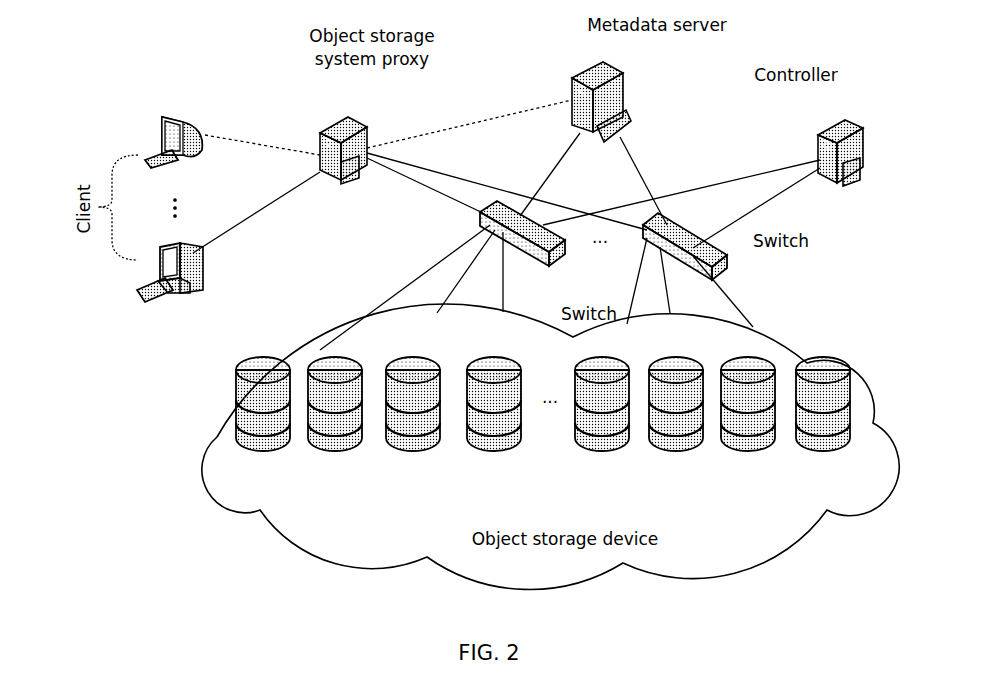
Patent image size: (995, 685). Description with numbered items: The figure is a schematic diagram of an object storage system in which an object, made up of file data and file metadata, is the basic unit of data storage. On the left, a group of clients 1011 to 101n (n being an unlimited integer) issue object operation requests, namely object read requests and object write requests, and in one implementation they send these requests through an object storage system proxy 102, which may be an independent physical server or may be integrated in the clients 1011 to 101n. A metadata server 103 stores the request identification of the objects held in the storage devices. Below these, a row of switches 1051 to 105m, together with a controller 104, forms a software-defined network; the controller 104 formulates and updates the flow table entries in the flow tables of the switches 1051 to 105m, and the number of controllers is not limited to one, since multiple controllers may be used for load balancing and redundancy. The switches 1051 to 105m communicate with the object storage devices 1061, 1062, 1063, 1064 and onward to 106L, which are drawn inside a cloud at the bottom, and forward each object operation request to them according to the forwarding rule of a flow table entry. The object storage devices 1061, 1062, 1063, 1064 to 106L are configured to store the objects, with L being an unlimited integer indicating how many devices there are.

The client 1011 is at (178, 113).
The client 101n is at (170, 297).
The object storage system proxy 102 is at (352, 112).
The metadata server 103 is at (622, 66).
The controller 104 is at (818, 132).
The switch 1051 is at (553, 260).
The switch 105m is at (730, 258).
The object storage device 1061 is at (260, 453).
The object storage device 1062 is at (332, 453).
The object storage device 1063 is at (410, 453).
The object storage device 1064 is at (491, 453).
The object storage device 106L is at (820, 453).